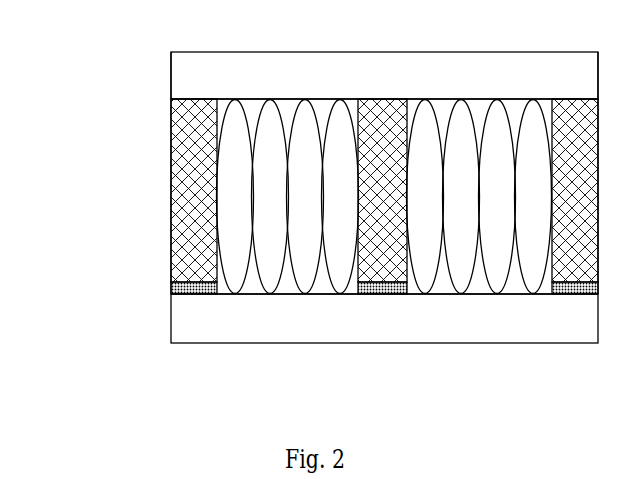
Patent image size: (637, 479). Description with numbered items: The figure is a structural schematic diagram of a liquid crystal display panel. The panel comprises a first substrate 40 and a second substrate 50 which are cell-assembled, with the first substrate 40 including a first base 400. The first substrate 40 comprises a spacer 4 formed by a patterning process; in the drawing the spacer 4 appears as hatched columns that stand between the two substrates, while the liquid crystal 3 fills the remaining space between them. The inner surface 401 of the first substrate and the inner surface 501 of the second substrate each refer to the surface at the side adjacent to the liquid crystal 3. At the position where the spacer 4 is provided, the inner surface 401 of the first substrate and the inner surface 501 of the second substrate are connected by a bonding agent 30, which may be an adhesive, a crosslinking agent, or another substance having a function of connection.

The first substrate 40 is at (92, 55).
The first base 400 is at (185, 63).
The inner surface of first substrate 401 is at (258, 98).
The spacer 4 is at (187, 117).
The liquid crystal 3 is at (233, 157).
The bonding agent 30 is at (172, 290).
The second substrate 50 is at (193, 332).
The inner surface of second substrate 501 is at (285, 294).